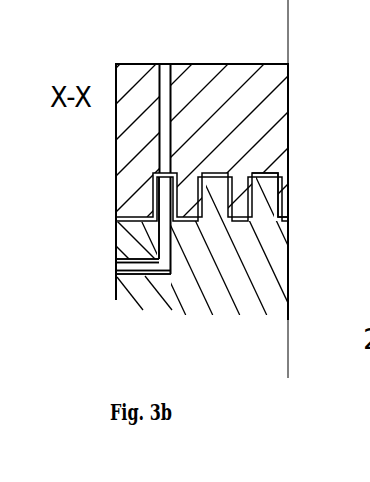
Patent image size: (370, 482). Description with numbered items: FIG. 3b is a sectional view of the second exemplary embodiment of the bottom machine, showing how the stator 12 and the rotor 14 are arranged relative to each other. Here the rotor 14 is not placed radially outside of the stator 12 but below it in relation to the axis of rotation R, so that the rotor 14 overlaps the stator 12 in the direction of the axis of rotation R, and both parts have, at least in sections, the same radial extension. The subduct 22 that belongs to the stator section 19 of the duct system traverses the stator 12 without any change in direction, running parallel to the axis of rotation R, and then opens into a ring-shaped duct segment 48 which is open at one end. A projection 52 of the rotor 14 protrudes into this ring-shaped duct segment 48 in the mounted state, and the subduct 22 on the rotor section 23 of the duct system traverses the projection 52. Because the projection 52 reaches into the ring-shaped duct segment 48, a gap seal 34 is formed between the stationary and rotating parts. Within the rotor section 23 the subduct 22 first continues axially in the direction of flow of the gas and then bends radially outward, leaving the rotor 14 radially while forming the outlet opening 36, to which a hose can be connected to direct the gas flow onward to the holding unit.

The stator 12 is at (285, 125).
The rotor 14 is at (287, 258).
The stator section 19 is at (165, 63).
The subduct 22 is at (165, 63).
The rotor section 23 is at (153, 268).
The gap seal 34 is at (153, 199).
The outlet opening 36 is at (115, 265).
The ring-shaped duct segment 48 is at (152, 178).
The projection 52 is at (277, 188).
The axis of rotation R is at (288, 40).